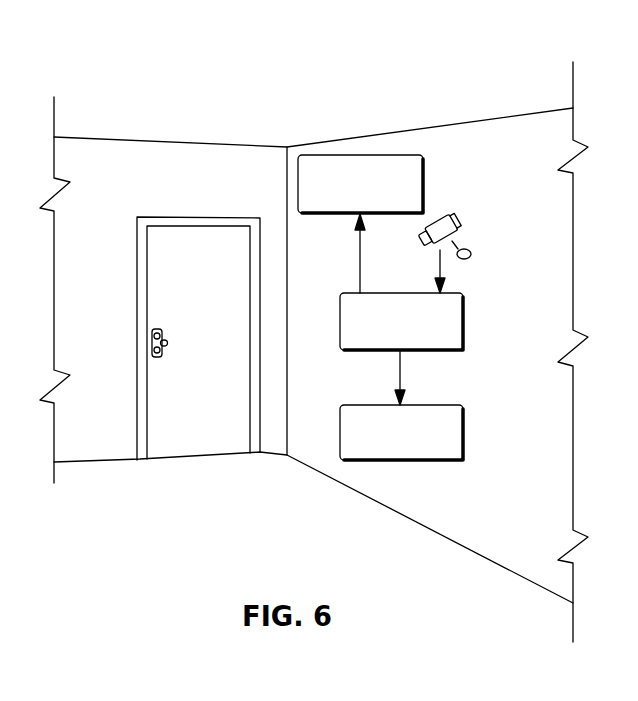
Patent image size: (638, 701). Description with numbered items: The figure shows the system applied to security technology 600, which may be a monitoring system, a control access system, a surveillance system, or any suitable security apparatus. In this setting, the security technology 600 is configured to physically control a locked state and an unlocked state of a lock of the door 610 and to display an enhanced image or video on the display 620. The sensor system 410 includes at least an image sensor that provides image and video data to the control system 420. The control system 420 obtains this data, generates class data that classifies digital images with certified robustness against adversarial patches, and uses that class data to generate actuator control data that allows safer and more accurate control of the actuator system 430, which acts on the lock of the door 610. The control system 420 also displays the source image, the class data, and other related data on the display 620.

The security technology 600 is at (461, 86).
The door 610 is at (223, 317).
The actuator system 430 is at (424, 183).
The sensor system 410 is at (464, 226).
The control system 420 is at (464, 324).
The display 620 is at (464, 434).